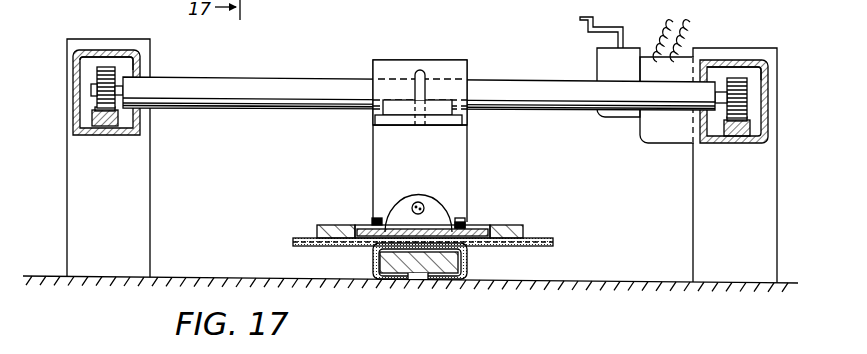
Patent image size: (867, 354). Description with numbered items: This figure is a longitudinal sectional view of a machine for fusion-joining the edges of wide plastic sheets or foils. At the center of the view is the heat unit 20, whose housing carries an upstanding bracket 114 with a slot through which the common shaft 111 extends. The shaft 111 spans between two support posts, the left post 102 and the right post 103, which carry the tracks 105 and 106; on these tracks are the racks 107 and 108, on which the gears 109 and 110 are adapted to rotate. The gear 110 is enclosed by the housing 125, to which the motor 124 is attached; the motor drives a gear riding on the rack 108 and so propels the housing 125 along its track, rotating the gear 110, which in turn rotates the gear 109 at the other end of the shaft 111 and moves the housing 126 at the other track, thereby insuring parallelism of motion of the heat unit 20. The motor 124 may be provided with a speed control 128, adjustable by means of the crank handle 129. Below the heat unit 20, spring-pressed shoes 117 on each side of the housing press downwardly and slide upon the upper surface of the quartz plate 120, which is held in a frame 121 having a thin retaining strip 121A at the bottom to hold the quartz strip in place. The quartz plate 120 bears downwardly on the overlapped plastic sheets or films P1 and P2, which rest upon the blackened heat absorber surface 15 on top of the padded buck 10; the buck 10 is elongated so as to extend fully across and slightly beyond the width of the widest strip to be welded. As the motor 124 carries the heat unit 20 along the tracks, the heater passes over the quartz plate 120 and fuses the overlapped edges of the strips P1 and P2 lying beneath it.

The padded buck 10 is at (442, 270).
The blackened heat absorber surface 15 is at (420, 255).
The heat unit 20 is at (452, 161).
The posts 102 is at (138, 203).
The right support column 103 is at (702, 209).
The track 105 is at (118, 136).
The track 106 is at (735, 136).
The rack 107 is at (118, 118).
The rack 108 is at (716, 141).
The gear 109 is at (109, 69).
The gear 110 is at (737, 78).
The common shaft 111 is at (262, 88).
The upstanding bracket 114 is at (421, 70).
The shoe 117 is at (375, 218).
The quartz plate 120 is at (494, 229).
The frame 121 is at (330, 226).
The thin retaining strip 121A is at (294, 241).
The motor 124 is at (645, 135).
The housing 125 is at (711, 59).
The housing 126 is at (141, 59).
The speed control 128 is at (600, 64).
The crank handle 129 is at (583, 30).
The plastic sheet strip P1 is at (500, 247).
The plastic sheet strip P2 is at (356, 246).